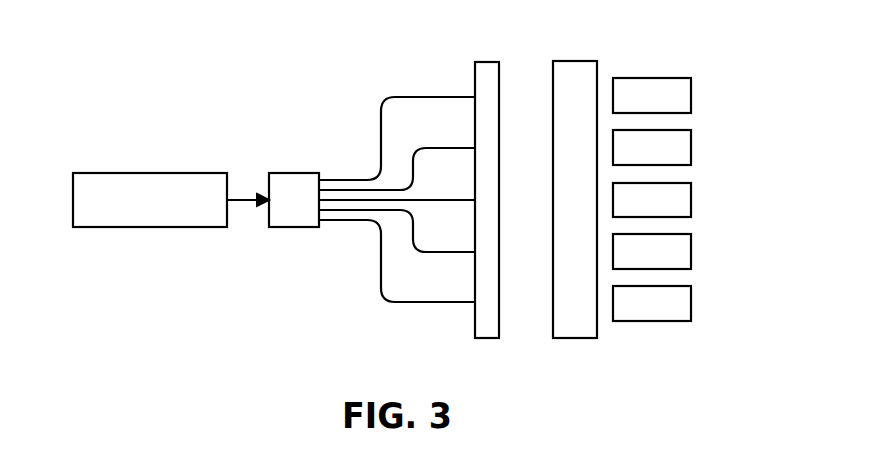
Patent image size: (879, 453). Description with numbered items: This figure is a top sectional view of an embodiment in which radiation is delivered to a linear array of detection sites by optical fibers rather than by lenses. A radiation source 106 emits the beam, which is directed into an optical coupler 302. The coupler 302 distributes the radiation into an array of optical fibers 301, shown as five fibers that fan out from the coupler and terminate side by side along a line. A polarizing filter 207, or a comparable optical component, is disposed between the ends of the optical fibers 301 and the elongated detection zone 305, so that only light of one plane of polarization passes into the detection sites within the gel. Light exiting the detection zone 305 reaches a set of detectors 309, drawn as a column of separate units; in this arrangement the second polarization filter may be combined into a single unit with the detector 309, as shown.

The radiation source 106 is at (97, 173).
The optical coupler 302 is at (294, 173).
The optical fibers 301 is at (392, 97).
The polarizing filter 207 is at (483, 62).
The elongated detection zone 305 is at (580, 61).
The detector 309 is at (691, 98).